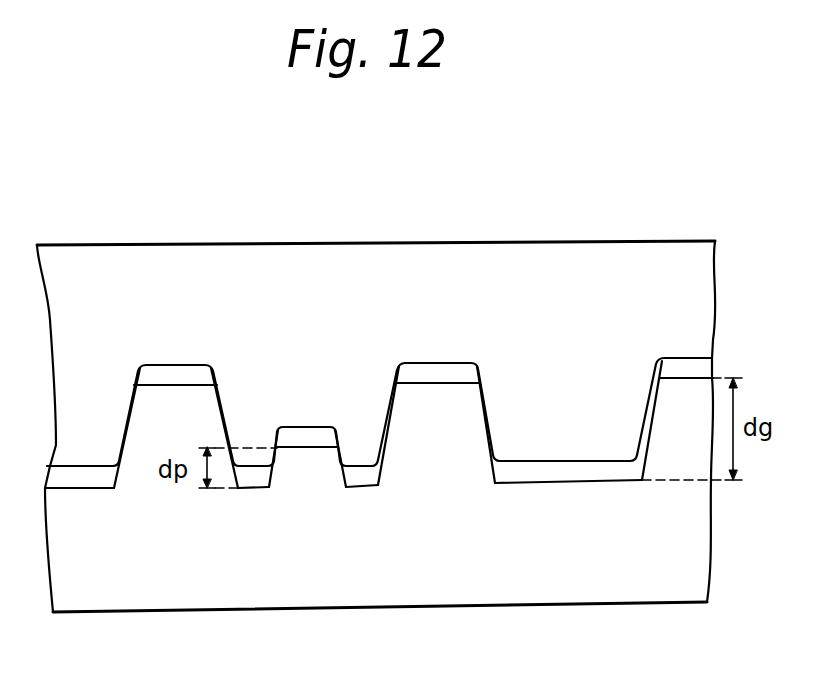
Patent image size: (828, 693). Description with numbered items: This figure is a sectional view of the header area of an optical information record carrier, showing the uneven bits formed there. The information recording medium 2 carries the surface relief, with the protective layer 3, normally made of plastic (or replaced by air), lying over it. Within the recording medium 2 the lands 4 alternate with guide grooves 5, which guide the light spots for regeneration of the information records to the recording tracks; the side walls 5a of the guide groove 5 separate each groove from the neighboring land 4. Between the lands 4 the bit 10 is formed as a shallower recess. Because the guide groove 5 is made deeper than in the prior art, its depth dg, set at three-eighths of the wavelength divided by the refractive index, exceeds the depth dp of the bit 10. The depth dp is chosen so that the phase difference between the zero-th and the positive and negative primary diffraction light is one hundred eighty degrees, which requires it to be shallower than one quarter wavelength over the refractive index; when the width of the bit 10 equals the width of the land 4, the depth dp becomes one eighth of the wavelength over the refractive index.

The information recording medium 2 is at (443, 370).
The protective layer 3 is at (611, 258).
The land 4 is at (580, 480).
The guide groove 5 is at (440, 383).
The mesa side wall 5a is at (488, 440).
The bit 10 is at (307, 447).